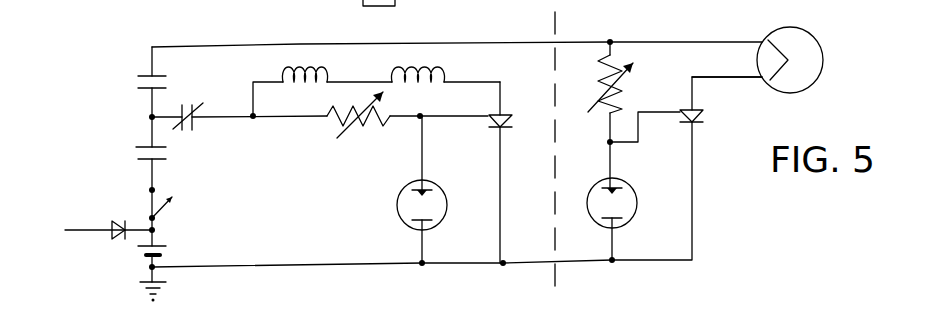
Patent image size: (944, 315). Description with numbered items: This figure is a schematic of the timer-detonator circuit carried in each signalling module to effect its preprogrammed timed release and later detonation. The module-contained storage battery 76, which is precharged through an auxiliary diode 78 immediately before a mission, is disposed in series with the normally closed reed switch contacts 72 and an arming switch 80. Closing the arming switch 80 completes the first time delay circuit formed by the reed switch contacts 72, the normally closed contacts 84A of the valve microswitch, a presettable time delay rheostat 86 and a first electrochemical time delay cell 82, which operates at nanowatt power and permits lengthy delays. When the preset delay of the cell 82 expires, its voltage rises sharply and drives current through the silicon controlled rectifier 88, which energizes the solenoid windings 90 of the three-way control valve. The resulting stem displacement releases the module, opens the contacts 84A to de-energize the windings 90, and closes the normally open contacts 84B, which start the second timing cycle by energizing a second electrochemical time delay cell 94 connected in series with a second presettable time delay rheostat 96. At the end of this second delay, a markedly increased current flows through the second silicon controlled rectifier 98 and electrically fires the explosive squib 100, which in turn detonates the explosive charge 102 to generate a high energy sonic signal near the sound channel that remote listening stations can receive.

The reed switch contacts 72 is at (136, 147).
The storage battery 76 is at (165, 248).
The auxiliary diode 78 is at (123, 241).
The arming switch 80 is at (146, 190).
The first electrochemical time delay cell 82 is at (398, 192).
The normally closed contacts of microswitch 84A is at (195, 132).
The normally open contacts of microswitch 84B is at (138, 78).
The presettable time delay rheostat 86 is at (344, 125).
The silicon controlled rectifier 88 is at (485, 137).
The solenoid windings 90 is at (392, 81).
The second electrochemical time delay cell 94 is at (638, 188).
The presettable time delay rheostat 96 is at (629, 84).
The second silicon controlled rectifier 98 is at (700, 124).
The explosive squib 100 is at (747, 100).
The explosive charge 102 is at (823, 60).